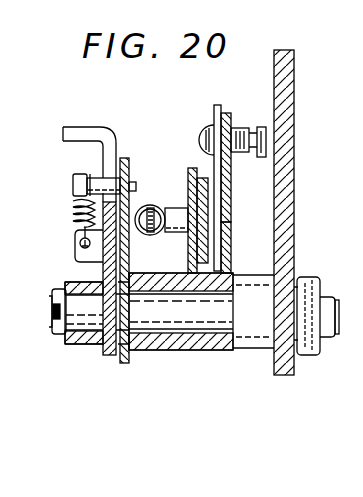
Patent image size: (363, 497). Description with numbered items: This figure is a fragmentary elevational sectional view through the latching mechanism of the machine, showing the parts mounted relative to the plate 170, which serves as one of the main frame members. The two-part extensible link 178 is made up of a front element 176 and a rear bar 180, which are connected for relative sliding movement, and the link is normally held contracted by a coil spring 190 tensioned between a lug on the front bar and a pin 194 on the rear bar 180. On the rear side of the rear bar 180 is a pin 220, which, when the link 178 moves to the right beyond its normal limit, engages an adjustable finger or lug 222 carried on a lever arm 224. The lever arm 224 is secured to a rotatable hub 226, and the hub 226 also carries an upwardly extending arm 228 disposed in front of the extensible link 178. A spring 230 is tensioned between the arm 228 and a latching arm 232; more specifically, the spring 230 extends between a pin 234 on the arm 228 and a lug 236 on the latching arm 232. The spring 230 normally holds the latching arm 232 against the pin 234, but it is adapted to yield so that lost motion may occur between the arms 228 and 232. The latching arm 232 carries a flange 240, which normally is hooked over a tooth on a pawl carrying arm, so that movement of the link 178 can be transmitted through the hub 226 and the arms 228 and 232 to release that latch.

The plate 170 is at (294, 81).
The rear bar 180 is at (233, 263).
The rotatable hub 226 is at (147, 349).
The latching arm 232 is at (108, 140).
The flange 240 is at (72, 127).
The upwardly extending arm 228 is at (126, 157).
The pin 234 is at (80, 174).
The spring 230 is at (72, 208).
The lug 236 is at (76, 254).
The coil spring 190 is at (138, 233).
The pin 194 is at (173, 208).
The front element 176 is at (188, 178).
The extensible link 178 is at (190, 160).
The adjustable finger 222 is at (222, 183).
The pin 220 is at (231, 206).
The lever arm 224 is at (231, 244).